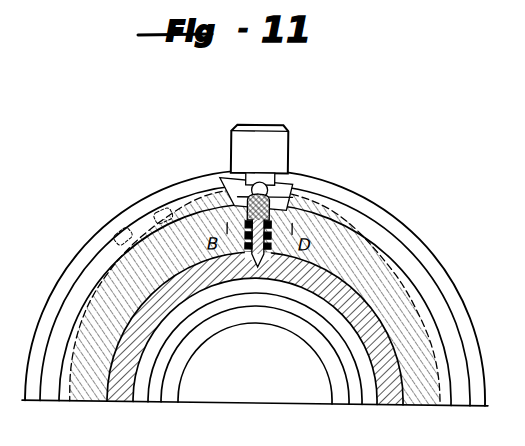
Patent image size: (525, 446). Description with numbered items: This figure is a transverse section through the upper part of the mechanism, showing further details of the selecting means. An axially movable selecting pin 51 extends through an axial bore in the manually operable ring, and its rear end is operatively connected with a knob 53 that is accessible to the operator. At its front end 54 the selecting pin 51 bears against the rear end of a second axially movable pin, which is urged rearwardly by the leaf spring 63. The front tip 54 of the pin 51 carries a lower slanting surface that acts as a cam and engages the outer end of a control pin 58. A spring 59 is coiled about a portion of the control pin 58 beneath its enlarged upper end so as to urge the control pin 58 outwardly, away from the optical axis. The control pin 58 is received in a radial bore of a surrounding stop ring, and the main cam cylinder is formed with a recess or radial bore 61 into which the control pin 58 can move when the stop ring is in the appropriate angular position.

The selecting pin 51 is at (268, 205).
The knob 53 is at (284, 143).
The front end of the selecting pin 54 is at (265, 188).
The control pin 58 is at (217, 179).
The spring 59 is at (271, 220).
The radial bore 61 is at (257, 263).
The leaf spring 63 is at (174, 201).